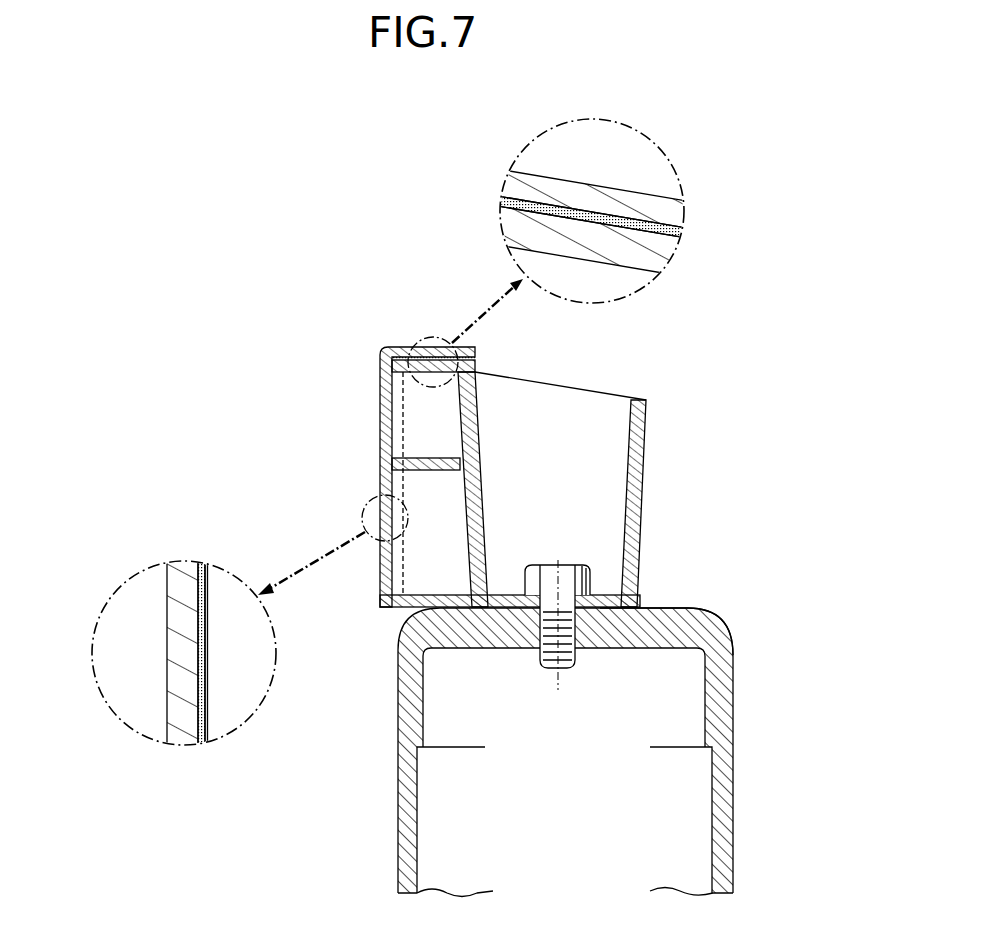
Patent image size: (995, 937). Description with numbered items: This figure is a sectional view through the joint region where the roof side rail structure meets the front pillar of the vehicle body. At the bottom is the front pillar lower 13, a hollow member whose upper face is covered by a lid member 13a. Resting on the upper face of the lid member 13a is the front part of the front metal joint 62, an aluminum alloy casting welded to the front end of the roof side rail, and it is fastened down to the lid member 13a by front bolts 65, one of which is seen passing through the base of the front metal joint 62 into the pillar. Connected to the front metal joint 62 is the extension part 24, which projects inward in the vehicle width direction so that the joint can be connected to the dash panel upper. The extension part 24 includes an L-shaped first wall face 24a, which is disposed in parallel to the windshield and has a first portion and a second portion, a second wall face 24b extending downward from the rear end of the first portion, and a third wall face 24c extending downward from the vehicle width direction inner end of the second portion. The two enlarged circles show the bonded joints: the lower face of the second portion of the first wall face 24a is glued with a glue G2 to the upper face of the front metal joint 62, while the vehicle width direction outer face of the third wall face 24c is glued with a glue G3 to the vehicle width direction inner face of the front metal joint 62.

The front pillar lower 13 is at (742, 812).
The lid member 13a is at (692, 617).
The extension part 24 is at (395, 419).
The first wall face 24a is at (579, 244).
The second wall face 24b is at (440, 353).
The third wall face 24c is at (380, 447).
The front metal joint 62 is at (647, 463).
The front bolts 65 is at (548, 566).
The glue G2 is at (418, 350).
The glue G3 is at (362, 518).